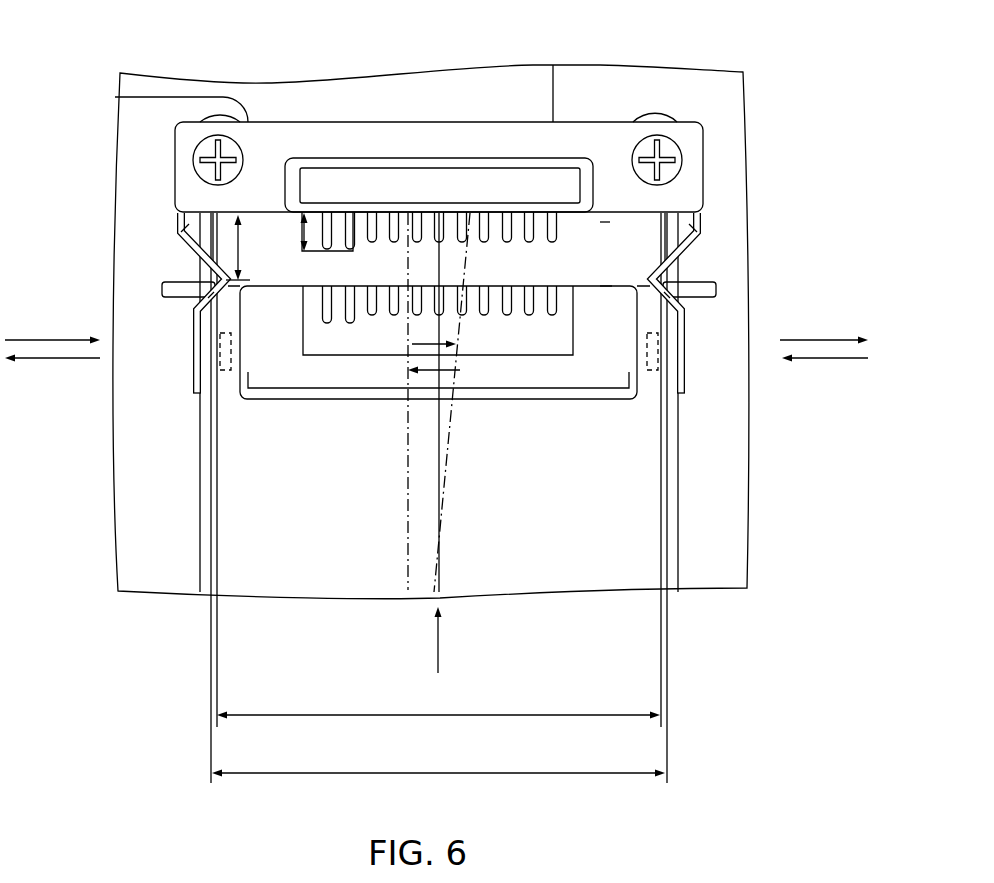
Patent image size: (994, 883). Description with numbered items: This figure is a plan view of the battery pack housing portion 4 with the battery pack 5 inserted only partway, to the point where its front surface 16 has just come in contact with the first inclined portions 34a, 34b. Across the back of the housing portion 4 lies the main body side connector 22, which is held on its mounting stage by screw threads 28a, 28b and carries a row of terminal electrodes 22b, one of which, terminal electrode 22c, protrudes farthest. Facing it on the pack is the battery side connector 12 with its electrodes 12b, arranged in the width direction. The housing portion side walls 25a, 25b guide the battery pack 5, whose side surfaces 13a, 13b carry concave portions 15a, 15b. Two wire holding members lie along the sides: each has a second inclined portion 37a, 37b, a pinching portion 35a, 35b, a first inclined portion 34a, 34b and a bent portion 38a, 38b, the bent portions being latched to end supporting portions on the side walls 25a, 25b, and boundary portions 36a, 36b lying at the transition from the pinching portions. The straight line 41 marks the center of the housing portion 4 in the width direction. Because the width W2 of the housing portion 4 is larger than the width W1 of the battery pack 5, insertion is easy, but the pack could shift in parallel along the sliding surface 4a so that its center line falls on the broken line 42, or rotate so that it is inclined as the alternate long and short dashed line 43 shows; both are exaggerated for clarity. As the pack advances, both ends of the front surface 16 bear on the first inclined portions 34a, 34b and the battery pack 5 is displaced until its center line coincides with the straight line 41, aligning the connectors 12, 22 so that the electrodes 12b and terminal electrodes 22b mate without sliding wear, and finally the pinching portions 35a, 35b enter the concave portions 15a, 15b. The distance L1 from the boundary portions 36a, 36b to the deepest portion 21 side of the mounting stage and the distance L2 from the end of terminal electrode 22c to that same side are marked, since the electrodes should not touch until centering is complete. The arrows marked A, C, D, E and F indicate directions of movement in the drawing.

The battery pack housing portion 4 is at (576, 245).
The sliding surface 4a is at (605, 222).
The battery pack 5 is at (623, 545).
The battery side connector 12 is at (568, 317).
The electrodes 12b is at (327, 313).
The side surface 13a is at (670, 476).
The side surface 13b is at (208, 476).
The concave portion 15a is at (658, 370).
The concave portion 15b is at (220, 370).
The front surface 16 is at (606, 282).
The deepest portion 21 is at (627, 215).
The main body side connector 22 is at (435, 175).
The terminal electrodes 22b is at (327, 215).
The terminal electrode 22c is at (348, 213).
The housing portion side wall 25a is at (672, 513).
The housing portion side wall 25b is at (205, 527).
The screw thread 28a is at (662, 134).
The screw thread 28b is at (200, 128).
The first inclined portion 34a is at (672, 302).
The first inclined portion 34b is at (206, 302).
The pinching portion 35a is at (678, 275).
The pinching portion 35b is at (200, 275).
The boundary portion 36a is at (712, 297).
The boundary portion 36b is at (166, 297).
The second inclined portion 37a is at (680, 253).
The second inclined portion 37b is at (198, 253).
The bent portion 38a is at (688, 393).
The bent portion 38b is at (190, 393).
The straight line 41 is at (439, 473).
The broken line 42 is at (408, 425).
The alternate long and short dashed line 43 is at (453, 445).
The direction A is at (440, 645).
The direction C is at (840, 340).
The direction D is at (832, 358).
The direction E is at (55, 340).
The direction F is at (48, 358).
The distance L1 is at (243, 250).
The distance L2 is at (302, 234).
The width W1 is at (493, 715).
The width W2 is at (493, 773).